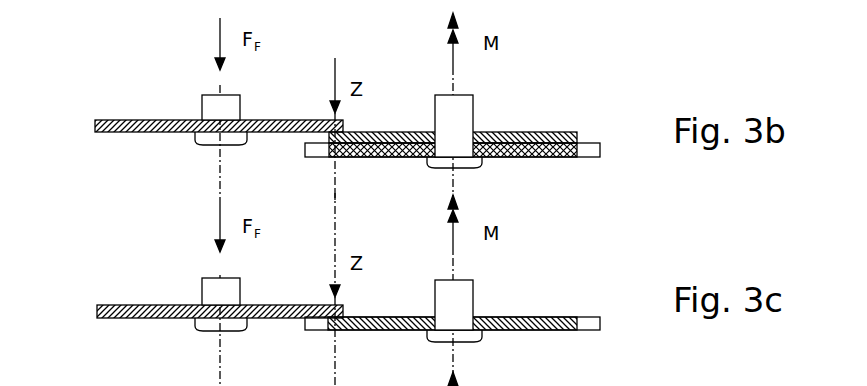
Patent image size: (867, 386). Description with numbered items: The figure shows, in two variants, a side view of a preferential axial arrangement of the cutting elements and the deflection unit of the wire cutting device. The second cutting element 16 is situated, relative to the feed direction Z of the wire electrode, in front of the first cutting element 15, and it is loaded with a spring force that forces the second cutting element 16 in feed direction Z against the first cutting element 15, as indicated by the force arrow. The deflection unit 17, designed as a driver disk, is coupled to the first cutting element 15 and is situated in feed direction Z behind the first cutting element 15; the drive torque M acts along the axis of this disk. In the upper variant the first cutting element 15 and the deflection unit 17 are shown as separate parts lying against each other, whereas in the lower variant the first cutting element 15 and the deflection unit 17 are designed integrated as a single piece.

In FIG. 3B, the first cutting element 15 is at (535, 132).
In FIG. 3C, the first cutting element 15 is at (523, 317).
In FIG. 3B, the second cutting element 16 is at (97, 131).
In FIG. 3C, the second cutting element 16 is at (98, 316).
In FIG. 3B, the deflection unit 17 is at (553, 157).
In FIG. 3C, the deflection unit 17 is at (617, 338).